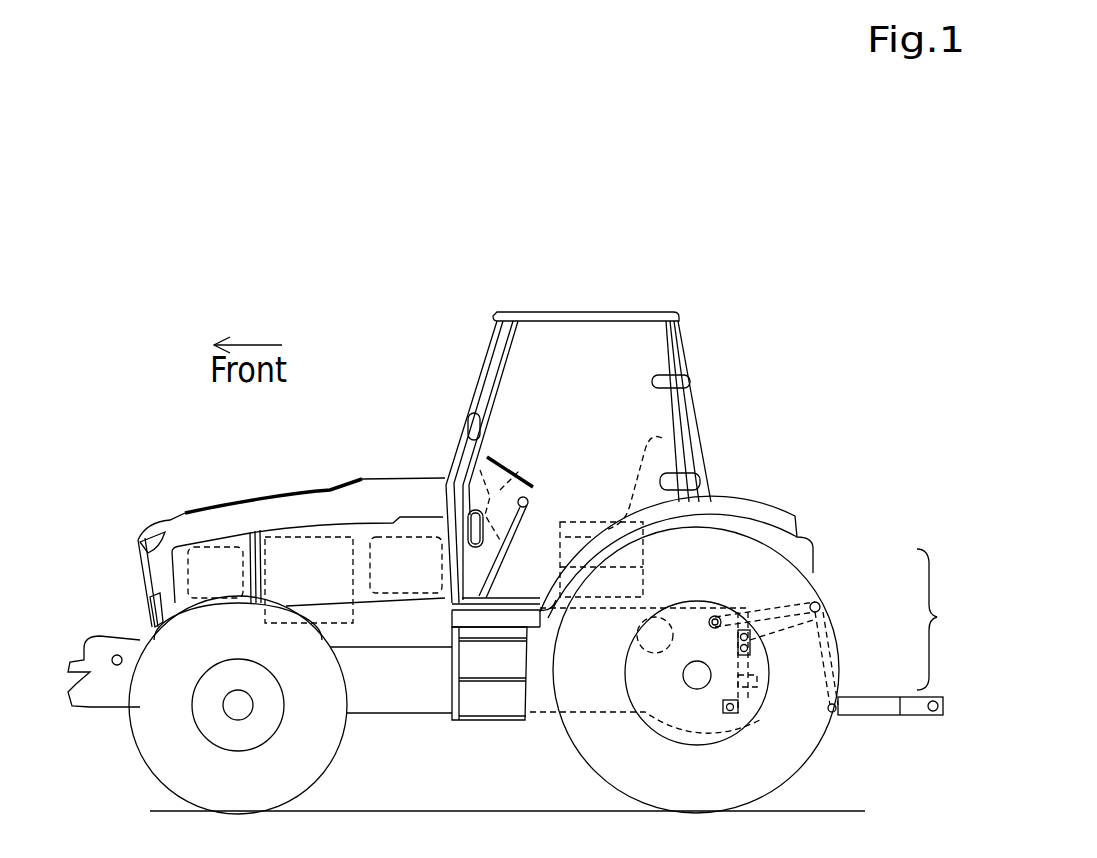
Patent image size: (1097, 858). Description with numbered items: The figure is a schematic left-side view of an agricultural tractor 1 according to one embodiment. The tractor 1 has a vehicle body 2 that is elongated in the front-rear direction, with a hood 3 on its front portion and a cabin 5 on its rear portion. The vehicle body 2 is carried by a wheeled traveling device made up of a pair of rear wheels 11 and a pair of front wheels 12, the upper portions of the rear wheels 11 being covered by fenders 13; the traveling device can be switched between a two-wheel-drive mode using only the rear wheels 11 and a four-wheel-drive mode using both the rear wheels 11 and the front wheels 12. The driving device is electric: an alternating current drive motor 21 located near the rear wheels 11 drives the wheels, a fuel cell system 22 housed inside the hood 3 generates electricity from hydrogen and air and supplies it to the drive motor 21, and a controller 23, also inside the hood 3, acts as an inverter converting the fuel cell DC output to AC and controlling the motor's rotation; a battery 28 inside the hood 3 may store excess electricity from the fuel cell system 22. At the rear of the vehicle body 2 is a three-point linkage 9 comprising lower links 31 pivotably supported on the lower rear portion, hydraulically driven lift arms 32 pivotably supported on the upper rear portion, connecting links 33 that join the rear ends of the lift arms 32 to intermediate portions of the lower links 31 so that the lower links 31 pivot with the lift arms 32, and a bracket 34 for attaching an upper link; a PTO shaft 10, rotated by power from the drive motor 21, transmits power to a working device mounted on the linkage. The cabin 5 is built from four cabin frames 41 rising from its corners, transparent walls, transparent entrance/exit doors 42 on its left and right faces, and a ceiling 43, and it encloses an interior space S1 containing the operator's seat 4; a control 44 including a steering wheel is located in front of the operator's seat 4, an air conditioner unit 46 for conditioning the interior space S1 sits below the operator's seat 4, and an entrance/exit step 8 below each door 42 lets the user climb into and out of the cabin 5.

The tractor 1 is at (318, 310).
The vehicle body 2 is at (407, 688).
The hood 3 is at (279, 523).
The operator's seat 4 is at (607, 500).
The cabin 5 is at (458, 426).
The entrance/exit step 8 is at (470, 725).
The three-point linkage 9 is at (940, 619).
The power take-off shaft 10 is at (757, 681).
The rear wheels 11 is at (795, 762).
The front wheels 12 is at (177, 762).
The fenders 13 is at (783, 515).
The drive motor 21 is at (640, 650).
The fuel cell system 22 is at (313, 537).
The controller 23 is at (388, 537).
The battery 28 is at (217, 545).
The lower links 31 is at (862, 703).
The lift arms 32 is at (800, 593).
The connecting links 33 is at (838, 657).
The bracket 34 is at (838, 620).
The cabin frames 41 is at (470, 400).
The entrance/exit doors 42 is at (648, 417).
The ceiling 43 is at (662, 312).
The control 44 is at (523, 478).
The air conditioner unit 46 is at (612, 583).
The interior space S1 is at (550, 402).